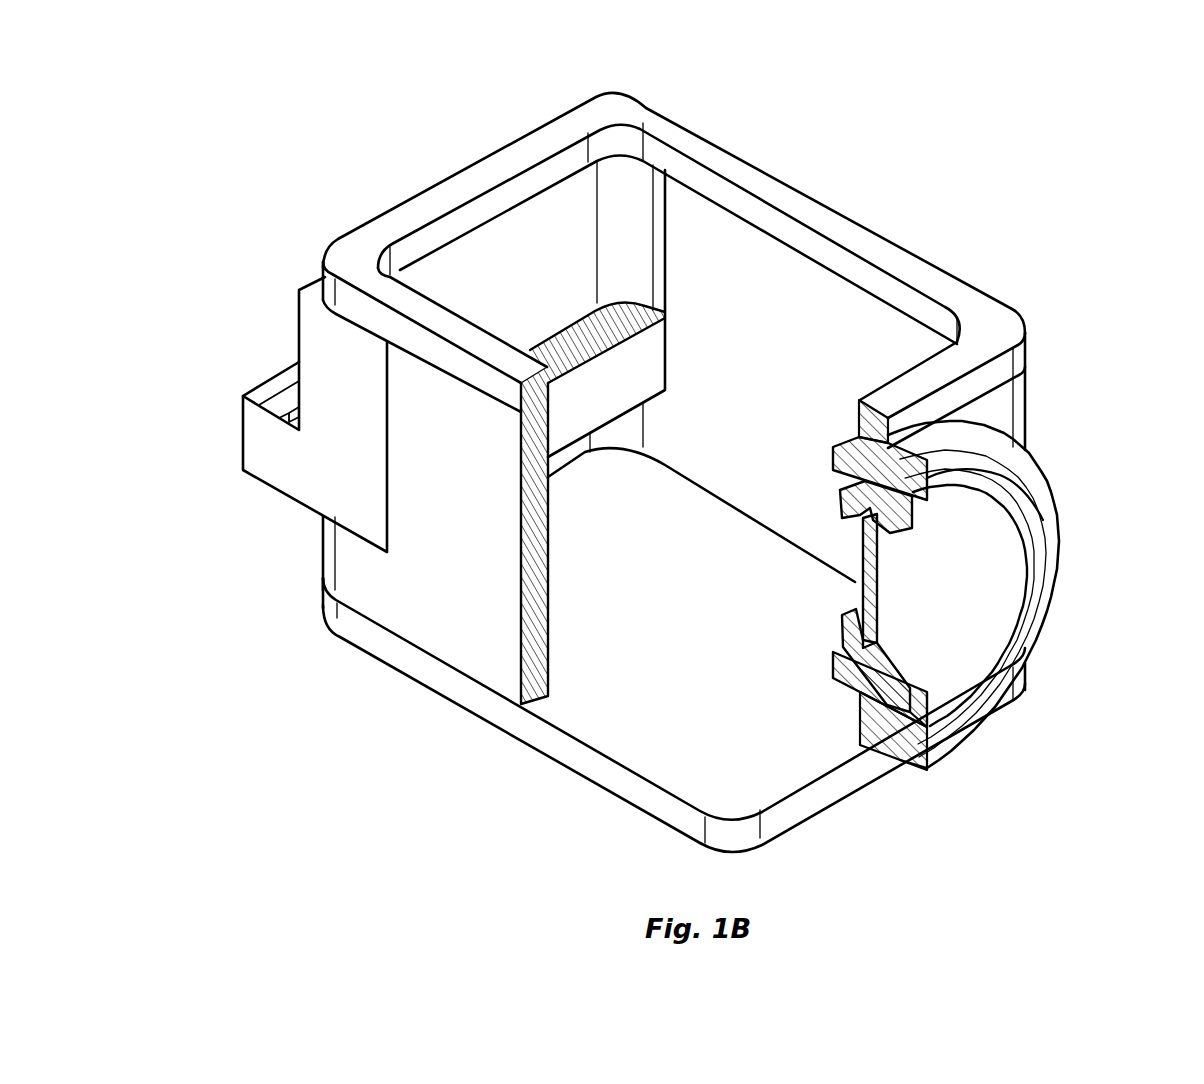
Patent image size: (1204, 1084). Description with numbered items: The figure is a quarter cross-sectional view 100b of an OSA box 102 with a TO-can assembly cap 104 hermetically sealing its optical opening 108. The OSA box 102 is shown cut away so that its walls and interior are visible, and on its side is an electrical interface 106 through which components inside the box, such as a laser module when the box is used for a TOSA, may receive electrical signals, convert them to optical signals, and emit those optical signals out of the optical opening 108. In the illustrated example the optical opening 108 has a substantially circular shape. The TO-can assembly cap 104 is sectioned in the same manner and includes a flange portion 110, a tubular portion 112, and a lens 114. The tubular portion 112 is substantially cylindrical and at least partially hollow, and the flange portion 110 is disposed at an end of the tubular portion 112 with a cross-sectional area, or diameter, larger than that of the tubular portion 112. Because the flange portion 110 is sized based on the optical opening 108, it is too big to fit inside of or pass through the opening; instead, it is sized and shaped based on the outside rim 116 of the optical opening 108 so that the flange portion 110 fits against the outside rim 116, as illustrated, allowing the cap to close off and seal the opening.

The quarter cross-sectional view 100b is at (1066, 145).
The OSA box 102 is at (488, 721).
The TO-can assembly cap 104 is at (911, 631).
The electrical interface 106 is at (293, 374).
The optical opening 108 is at (849, 588).
The flange portion 110 is at (917, 697).
The tubular portion 112 is at (975, 489).
The lens 114 is at (900, 575).
The outside rim 116 is at (960, 733).